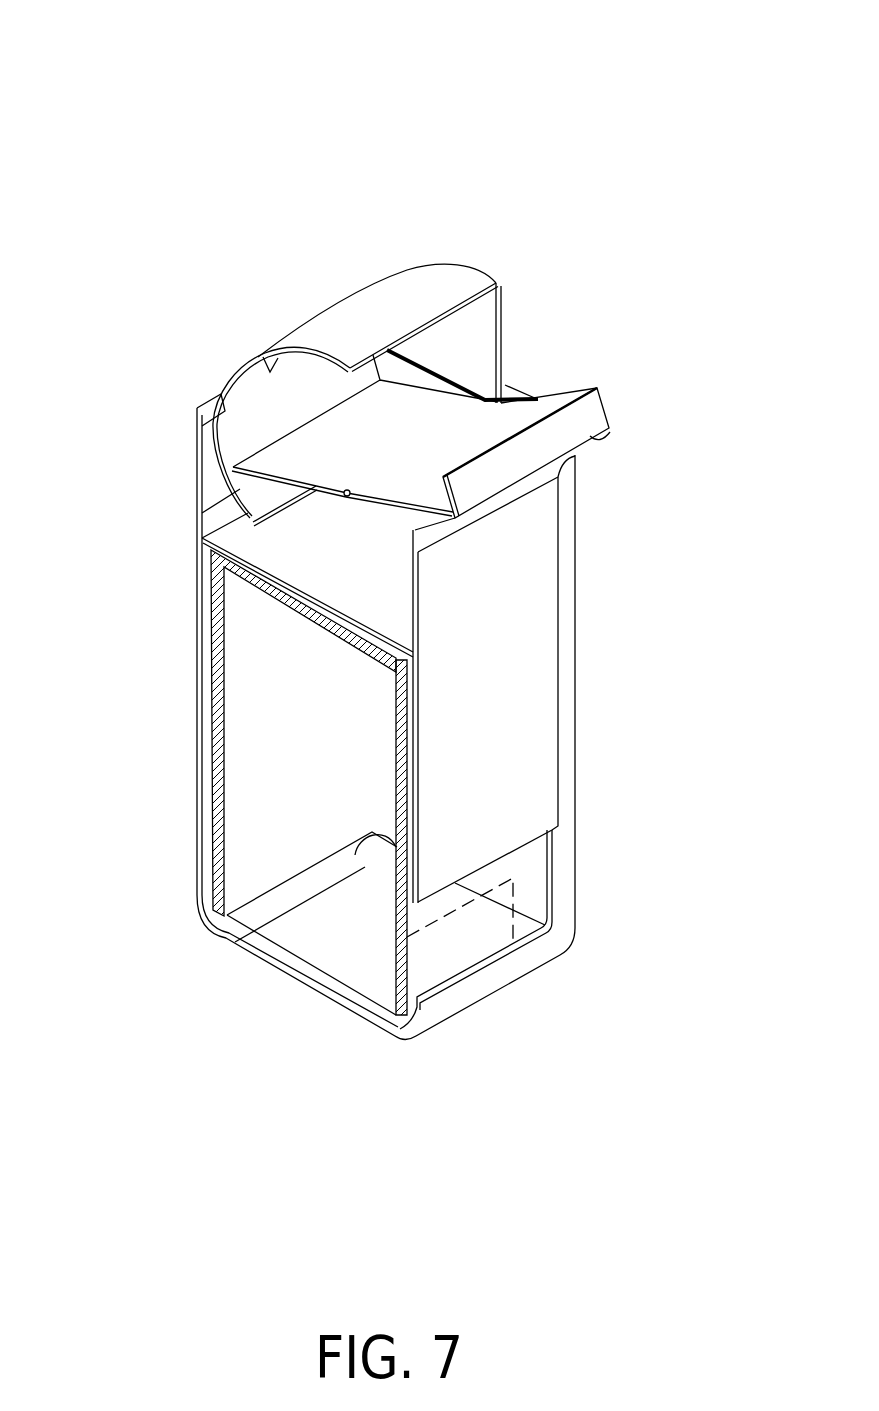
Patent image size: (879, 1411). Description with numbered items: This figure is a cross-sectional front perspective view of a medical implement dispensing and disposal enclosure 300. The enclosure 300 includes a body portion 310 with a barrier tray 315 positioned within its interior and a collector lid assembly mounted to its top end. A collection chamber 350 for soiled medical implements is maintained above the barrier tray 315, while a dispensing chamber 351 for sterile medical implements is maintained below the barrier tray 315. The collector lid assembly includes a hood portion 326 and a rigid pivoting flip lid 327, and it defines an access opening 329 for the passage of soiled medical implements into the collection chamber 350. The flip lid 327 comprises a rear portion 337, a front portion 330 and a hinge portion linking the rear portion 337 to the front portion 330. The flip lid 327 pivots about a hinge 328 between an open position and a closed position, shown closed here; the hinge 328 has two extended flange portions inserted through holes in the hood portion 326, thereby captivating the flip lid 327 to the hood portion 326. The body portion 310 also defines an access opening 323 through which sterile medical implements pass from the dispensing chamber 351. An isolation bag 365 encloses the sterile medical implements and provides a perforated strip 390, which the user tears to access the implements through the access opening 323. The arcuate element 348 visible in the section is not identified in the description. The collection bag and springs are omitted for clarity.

The medical implement dispensing and disposal enclosure 300 is at (146, 171).
The body portion 310 is at (574, 569).
The barrier tray 315 is at (226, 585).
The access opening 323 is at (513, 850).
The hood portion 326 is at (415, 316).
The flip lid 327 is at (198, 407).
The hinge 328 is at (505, 390).
The access opening 329 is at (473, 402).
The front portion 330 is at (610, 408).
The rear portion 337 is at (335, 400).
The arcuate guide 348 is at (258, 356).
The collection chamber 350 is at (183, 423).
The dispensing chamber 351 is at (183, 543).
The isolation bag 365 is at (407, 953).
The perforated strip 390 is at (515, 897).